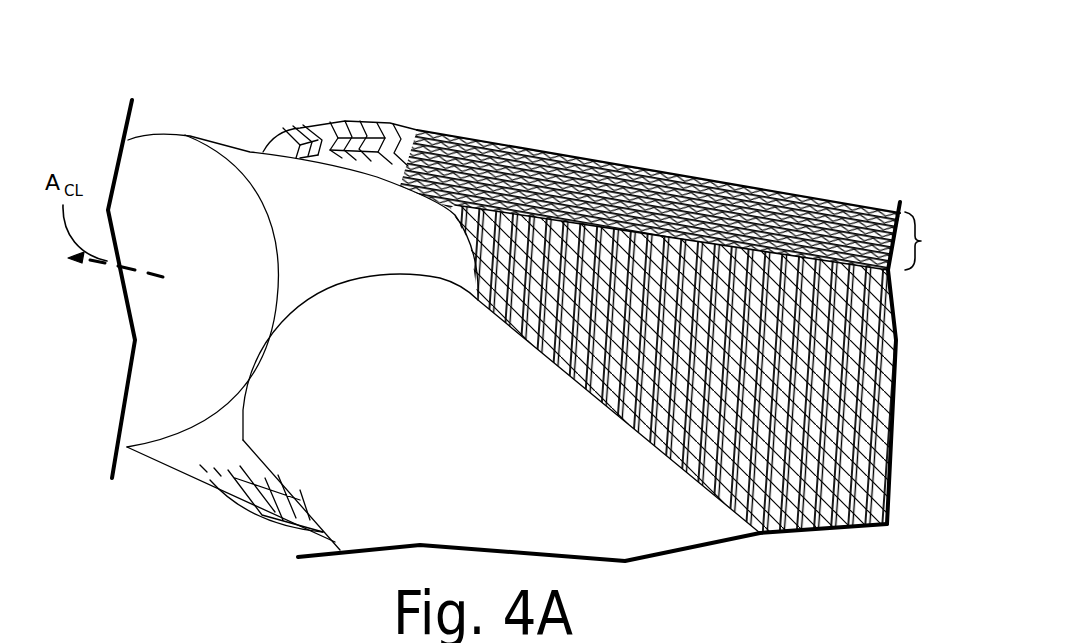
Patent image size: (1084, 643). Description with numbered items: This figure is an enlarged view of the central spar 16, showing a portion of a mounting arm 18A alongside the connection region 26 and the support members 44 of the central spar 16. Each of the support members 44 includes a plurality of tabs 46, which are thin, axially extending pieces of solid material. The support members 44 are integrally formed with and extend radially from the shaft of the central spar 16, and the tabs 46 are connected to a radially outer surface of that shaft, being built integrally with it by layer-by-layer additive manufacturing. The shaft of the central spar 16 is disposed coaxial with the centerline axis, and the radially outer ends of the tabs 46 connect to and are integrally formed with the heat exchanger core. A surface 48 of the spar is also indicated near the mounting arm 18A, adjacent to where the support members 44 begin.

The central spar 16 is at (172, 133).
The tissue contacting surface 18A is at (448, 441).
The connection region 26 is at (933, 241).
The support members 44 is at (570, 155).
The tabs 46 is at (273, 147).
The atraumatic tip surface 48 is at (228, 326).